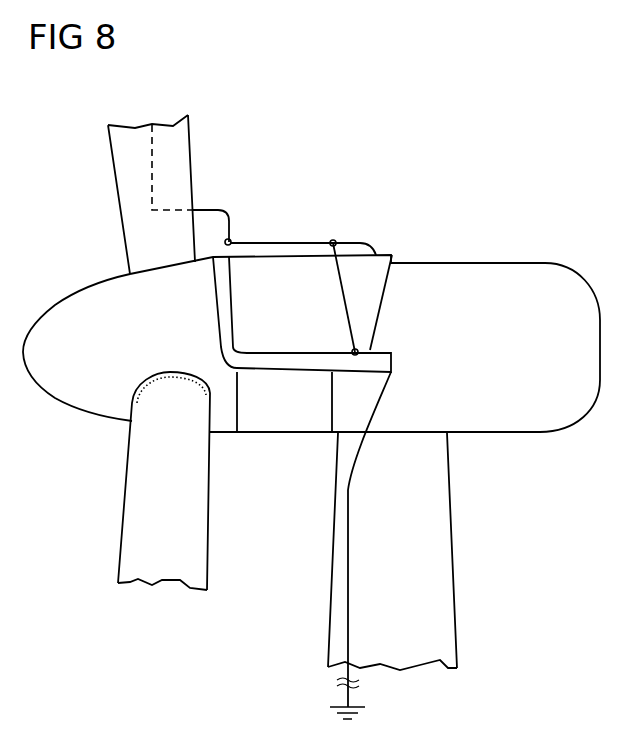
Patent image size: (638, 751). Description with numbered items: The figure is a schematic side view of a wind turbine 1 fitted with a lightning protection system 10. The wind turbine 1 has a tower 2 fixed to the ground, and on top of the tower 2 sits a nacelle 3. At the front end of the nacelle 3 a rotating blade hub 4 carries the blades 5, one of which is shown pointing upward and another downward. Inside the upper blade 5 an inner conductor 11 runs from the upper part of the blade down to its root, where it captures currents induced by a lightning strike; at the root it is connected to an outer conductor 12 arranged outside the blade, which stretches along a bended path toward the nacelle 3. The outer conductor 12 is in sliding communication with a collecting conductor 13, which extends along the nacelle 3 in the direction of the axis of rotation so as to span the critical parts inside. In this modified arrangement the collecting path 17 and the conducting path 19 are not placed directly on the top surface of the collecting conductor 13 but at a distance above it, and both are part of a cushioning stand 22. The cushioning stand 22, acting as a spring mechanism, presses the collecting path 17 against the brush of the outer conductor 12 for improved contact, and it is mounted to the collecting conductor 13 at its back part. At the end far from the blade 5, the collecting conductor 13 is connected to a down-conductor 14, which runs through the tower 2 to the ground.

The wind turbine 1 is at (538, 496).
The tower 2 is at (437, 537).
The nacelle 3 is at (517, 277).
The blade hub 4 is at (85, 392).
The blade 5 is at (135, 530).
The lightning protection system 10 is at (357, 191).
The inner conductor 11 is at (152, 158).
The outer conductor 12 is at (205, 207).
The collecting conductor 13 is at (373, 292).
The down-conductor 14 is at (350, 618).
The collecting path 17 is at (232, 239).
The conducting path 19 is at (308, 243).
The cushioning stand 22 is at (299, 189).